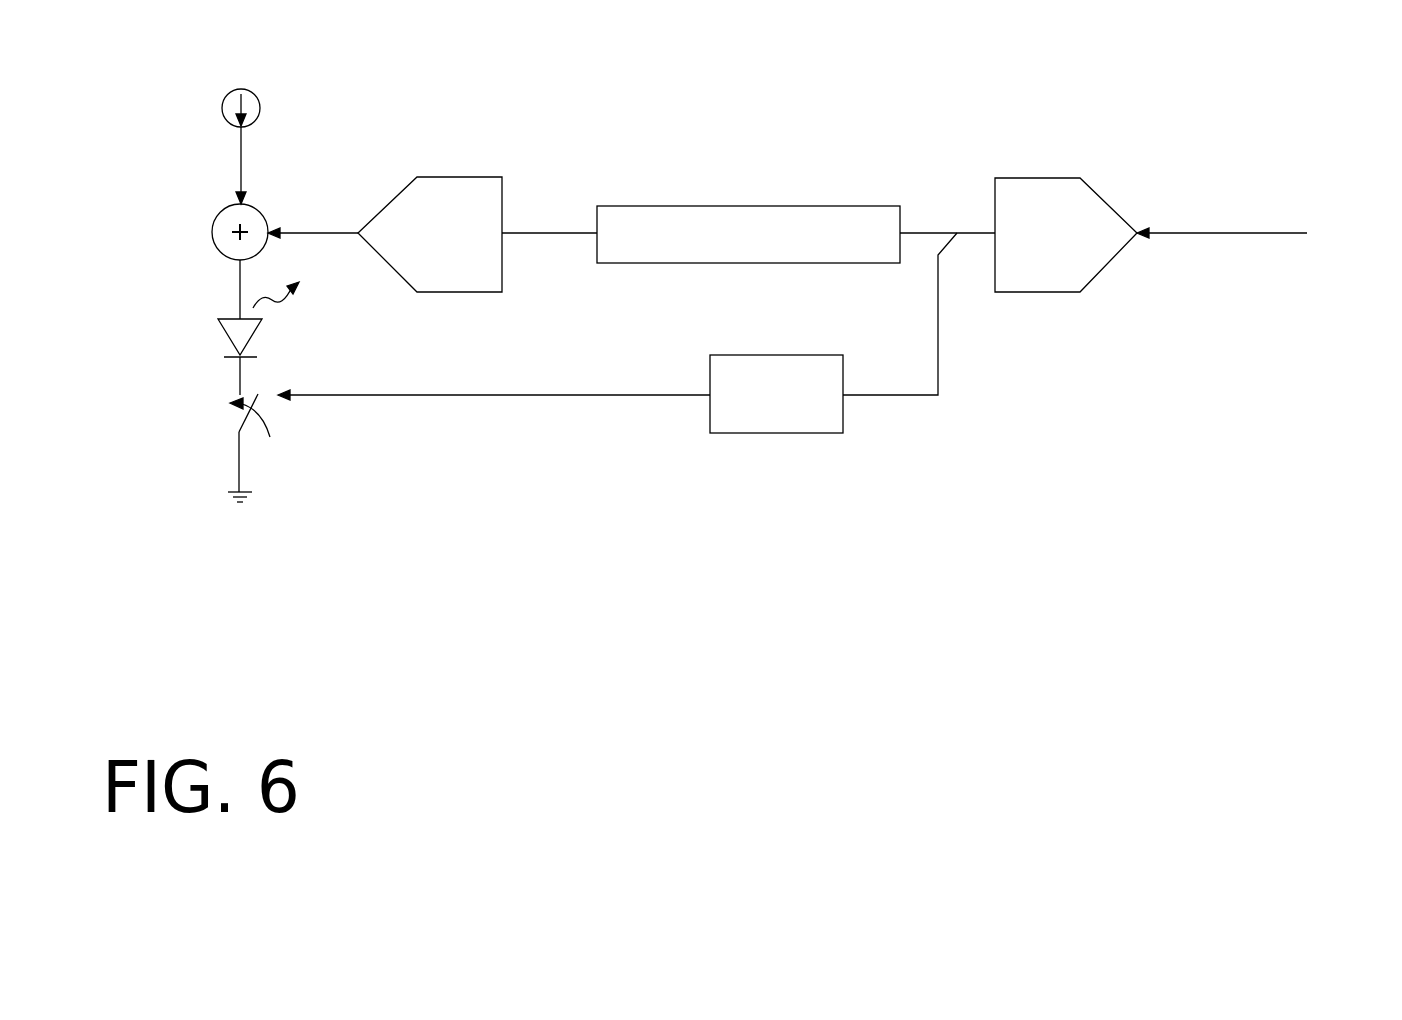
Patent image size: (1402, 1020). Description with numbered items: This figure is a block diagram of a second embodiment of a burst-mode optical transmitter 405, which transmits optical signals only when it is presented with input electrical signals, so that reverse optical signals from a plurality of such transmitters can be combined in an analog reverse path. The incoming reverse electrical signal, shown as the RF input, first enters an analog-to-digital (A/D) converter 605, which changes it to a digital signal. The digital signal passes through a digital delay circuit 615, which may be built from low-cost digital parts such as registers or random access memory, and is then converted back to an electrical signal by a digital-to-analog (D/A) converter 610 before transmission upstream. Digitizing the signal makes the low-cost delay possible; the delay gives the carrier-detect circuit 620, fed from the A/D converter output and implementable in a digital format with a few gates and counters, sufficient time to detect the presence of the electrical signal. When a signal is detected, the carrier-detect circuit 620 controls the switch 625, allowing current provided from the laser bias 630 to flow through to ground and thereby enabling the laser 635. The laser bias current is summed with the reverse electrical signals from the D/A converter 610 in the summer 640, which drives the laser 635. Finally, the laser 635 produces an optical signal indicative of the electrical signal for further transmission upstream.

The burst-mode optical transmitter 405 is at (992, 613).
The analog-to-digital (A/D) converter 605 is at (1017, 178).
The digital-to-analog (D/A) converter 610 is at (428, 182).
The digital delay circuit 615 is at (672, 205).
The carrier-detect circuit 620 is at (733, 433).
The switch 625 is at (268, 405).
The laser bias 630 is at (257, 114).
The laser 635 is at (203, 337).
The summer 640 is at (259, 207).